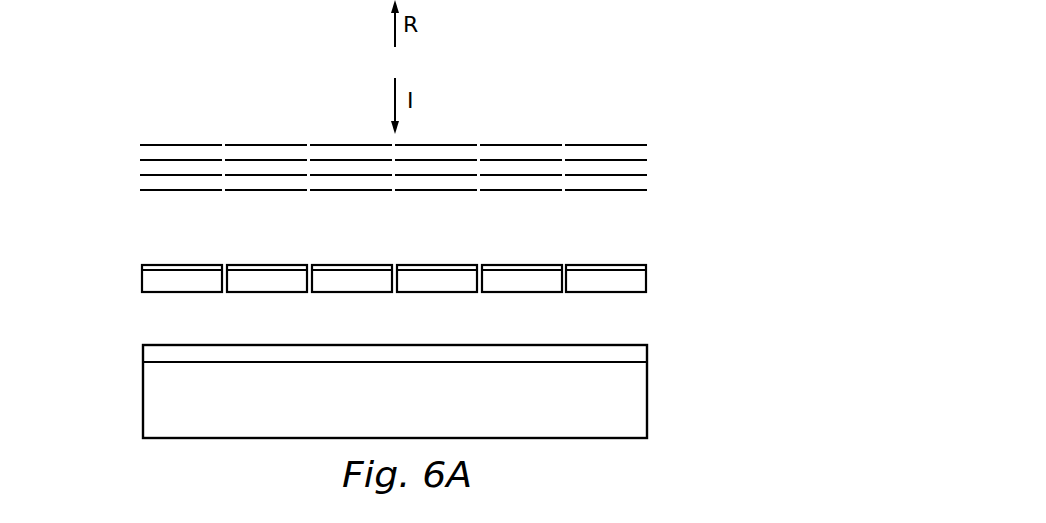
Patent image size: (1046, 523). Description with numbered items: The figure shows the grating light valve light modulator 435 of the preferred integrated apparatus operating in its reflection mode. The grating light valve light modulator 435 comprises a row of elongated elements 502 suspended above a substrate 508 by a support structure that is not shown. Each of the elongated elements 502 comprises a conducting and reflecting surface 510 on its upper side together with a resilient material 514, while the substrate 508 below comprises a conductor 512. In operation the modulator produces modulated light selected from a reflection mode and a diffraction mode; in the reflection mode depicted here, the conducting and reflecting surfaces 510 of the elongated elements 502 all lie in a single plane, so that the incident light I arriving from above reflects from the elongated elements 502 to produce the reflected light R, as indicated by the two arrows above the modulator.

The grating light valve light modulator 435 is at (664, 129).
The elongated elements 502 is at (142, 288).
The substrate 508 is at (415, 407).
The conducting and reflecting surface 510 is at (268, 266).
The conductor 512 is at (647, 349).
The resilient material 514 is at (399, 262).